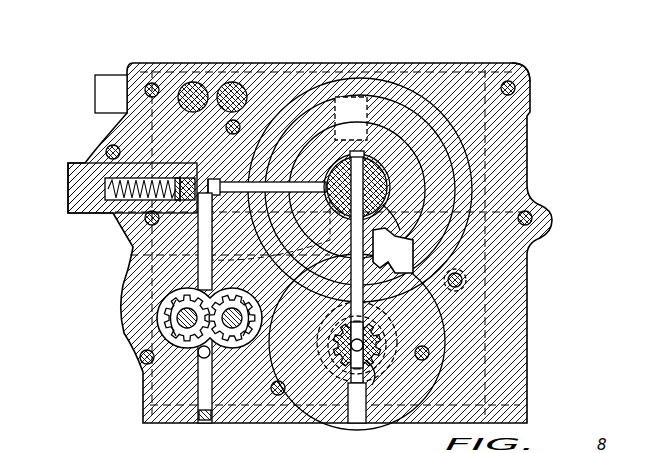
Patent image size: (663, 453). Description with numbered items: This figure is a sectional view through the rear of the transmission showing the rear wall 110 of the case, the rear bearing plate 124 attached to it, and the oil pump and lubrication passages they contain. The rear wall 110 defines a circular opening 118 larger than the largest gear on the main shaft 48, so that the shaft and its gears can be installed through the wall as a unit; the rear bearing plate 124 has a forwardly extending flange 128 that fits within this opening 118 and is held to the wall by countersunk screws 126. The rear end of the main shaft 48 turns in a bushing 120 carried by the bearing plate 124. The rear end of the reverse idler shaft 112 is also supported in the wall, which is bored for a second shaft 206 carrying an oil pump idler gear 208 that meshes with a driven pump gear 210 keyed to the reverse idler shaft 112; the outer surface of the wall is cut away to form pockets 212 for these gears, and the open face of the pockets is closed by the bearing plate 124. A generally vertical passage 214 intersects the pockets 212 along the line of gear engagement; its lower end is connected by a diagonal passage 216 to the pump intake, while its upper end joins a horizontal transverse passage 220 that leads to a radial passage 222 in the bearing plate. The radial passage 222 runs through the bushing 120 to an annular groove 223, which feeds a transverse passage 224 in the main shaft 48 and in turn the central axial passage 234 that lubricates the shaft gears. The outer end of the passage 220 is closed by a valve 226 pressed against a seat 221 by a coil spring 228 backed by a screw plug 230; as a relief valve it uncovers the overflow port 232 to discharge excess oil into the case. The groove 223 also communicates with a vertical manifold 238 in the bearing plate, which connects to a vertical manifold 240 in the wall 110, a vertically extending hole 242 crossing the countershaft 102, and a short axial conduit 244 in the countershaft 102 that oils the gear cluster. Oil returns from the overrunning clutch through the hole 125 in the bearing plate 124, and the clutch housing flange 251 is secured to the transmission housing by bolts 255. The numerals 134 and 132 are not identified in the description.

The rear wall 110 is at (468, 358).
The rear bearing plate 124 is at (410, 88).
The circular opening 118 is at (393, 98).
The forwardly extending flange 128 is at (336, 96).
The radial passage 222 is at (300, 182).
The countershaft 102 is at (355, 372).
The vertical manifold 238 is at (376, 240).
The main shaft 48 is at (322, 205).
The horizontal transverse passage 220 is at (240, 192).
The seat 221 is at (212, 184).
The transverse passage 224 is at (372, 175).
The central axial passage 234 is at (362, 187).
The bushing 120 is at (368, 160).
The annular groove 223 is at (390, 240).
The coil spring 228 is at (75, 199).
The screw plug 230 is at (72, 170).
The overflow port 232 is at (178, 186).
The valve 226 is at (185, 172).
The vertical passage 214 is at (202, 245).
The diagonal passage 216 is at (210, 355).
The driven pump gear 210 is at (222, 288).
The oil pump idler gear 208 is at (160, 303).
The second shaft 206 is at (172, 318).
The reverse idler shaft 112 is at (245, 318).
The pockets 212 is at (160, 328).
The vertical manifold 240 is at (372, 320).
The vertically extending hole 242 is at (372, 340).
The short axial conduit 244 is at (367, 370).
The bolt 134 is at (154, 84).
The bore 132 is at (196, 86).
The countersunk screws 126 is at (236, 120).
The bolts 255 is at (514, 90).
The flange 251 is at (516, 72).
The hole 125 is at (447, 275).